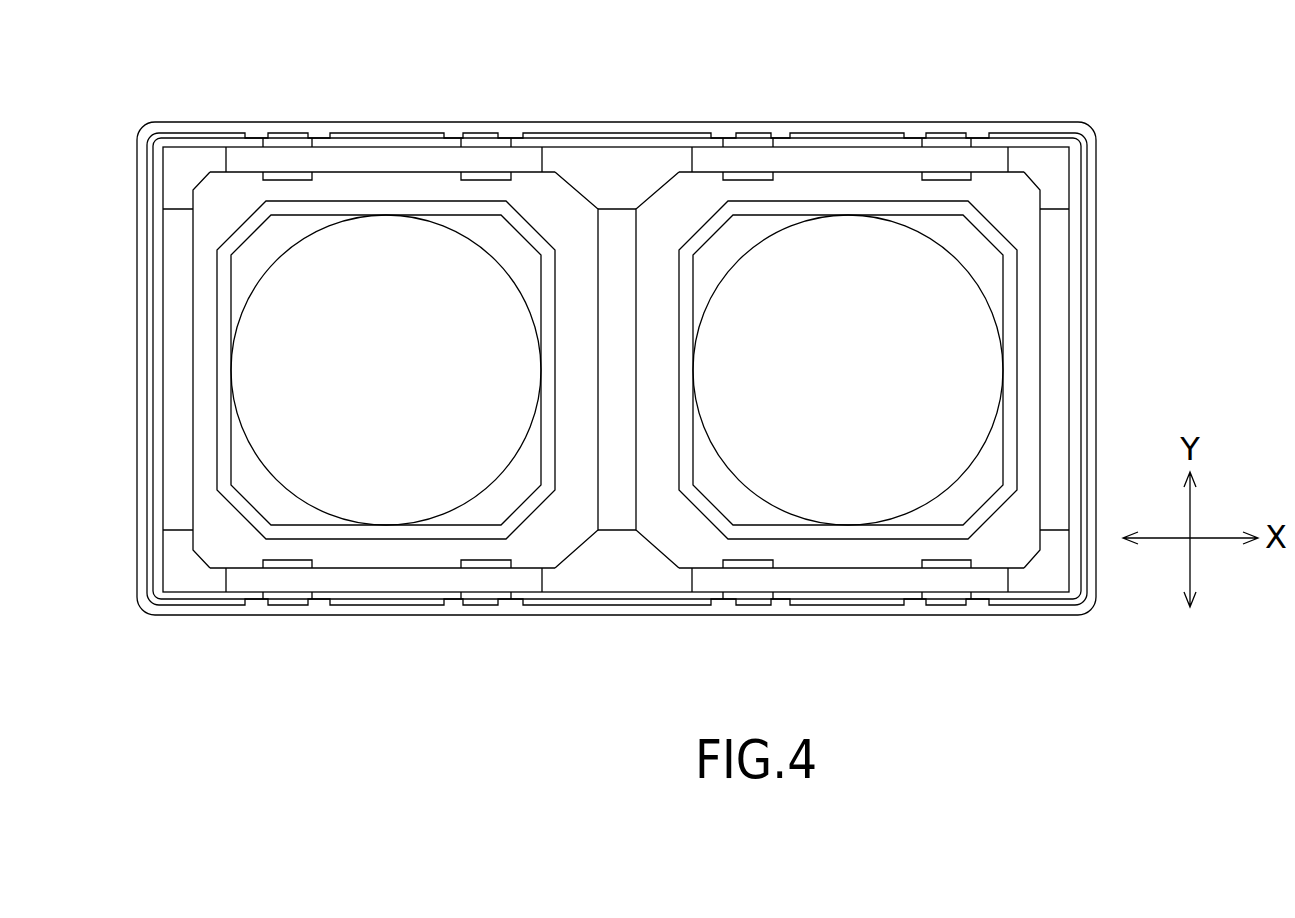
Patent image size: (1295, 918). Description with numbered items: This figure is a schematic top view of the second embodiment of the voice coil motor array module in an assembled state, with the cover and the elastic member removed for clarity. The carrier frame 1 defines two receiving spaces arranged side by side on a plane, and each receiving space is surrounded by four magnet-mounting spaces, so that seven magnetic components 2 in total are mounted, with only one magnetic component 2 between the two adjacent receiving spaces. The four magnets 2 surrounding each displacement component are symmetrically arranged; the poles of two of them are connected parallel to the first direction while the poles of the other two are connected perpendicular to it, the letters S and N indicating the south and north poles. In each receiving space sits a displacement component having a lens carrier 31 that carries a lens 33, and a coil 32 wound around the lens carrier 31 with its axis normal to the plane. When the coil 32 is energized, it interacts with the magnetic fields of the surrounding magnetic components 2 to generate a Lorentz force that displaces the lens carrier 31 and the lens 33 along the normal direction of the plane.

The carrier frame 1 is at (1040, 153).
The magnetic component 2 is at (708, 160).
The lens carrier 31 is at (286, 232).
The coil 32 is at (441, 207).
The lens 33 is at (372, 247).